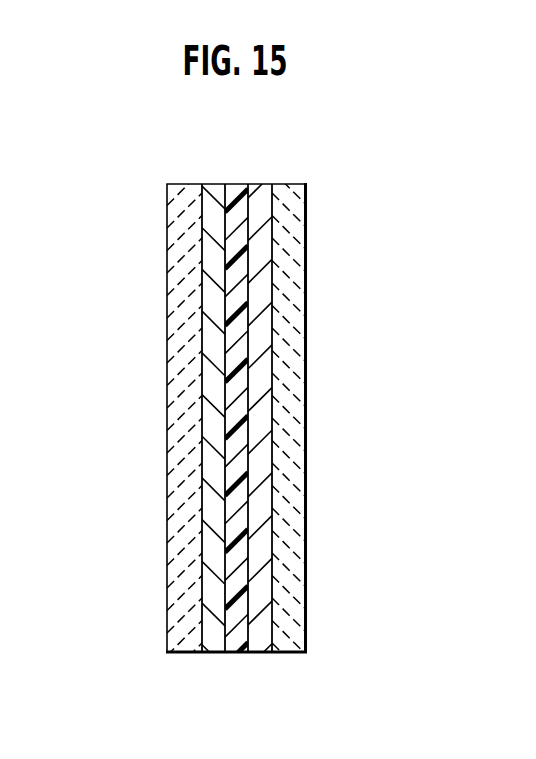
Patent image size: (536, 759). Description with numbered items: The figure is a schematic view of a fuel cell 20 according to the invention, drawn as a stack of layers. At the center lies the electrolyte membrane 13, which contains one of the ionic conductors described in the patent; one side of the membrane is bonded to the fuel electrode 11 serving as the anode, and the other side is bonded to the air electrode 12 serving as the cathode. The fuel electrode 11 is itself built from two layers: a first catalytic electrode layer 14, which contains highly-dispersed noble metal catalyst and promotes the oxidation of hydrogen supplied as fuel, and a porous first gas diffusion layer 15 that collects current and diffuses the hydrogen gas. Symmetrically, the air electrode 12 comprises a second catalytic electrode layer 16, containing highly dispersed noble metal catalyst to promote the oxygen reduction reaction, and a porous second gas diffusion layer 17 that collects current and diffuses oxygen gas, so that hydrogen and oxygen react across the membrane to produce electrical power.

The fuel electrode 11 is at (108, 103).
The air electrode 12 is at (368, 103).
The electrolyte membrane 13 is at (235, 184).
The first catalytic electrode layer 14 is at (212, 184).
The first gas diffusion layer 15 is at (187, 184).
The second catalytic electrode layer 16 is at (260, 184).
The second gas diffusion layer 17 is at (288, 184).
The fuel cell 20 is at (330, 243).